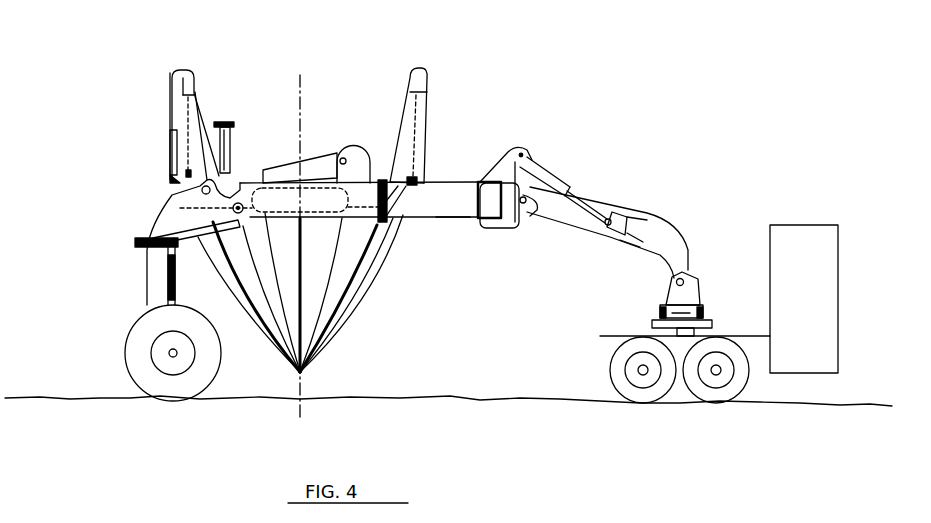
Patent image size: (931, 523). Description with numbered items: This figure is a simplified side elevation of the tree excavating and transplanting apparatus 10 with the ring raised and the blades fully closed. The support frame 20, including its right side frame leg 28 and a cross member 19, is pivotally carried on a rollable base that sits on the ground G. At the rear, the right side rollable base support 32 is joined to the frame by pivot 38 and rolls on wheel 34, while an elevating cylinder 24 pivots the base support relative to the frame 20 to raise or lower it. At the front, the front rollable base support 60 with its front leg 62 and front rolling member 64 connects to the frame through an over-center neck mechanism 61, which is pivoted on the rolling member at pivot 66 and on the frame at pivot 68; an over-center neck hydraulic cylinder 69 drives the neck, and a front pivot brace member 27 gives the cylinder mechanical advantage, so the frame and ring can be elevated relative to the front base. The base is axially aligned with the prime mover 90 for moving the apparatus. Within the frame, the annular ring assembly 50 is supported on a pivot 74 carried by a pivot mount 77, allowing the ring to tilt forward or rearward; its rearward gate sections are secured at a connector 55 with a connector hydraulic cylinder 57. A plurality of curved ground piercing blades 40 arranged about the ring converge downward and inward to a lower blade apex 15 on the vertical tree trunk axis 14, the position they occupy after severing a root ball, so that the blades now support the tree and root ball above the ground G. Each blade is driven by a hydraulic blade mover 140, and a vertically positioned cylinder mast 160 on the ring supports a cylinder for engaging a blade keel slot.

The tree excavating and transplanting apparatus 10 is at (569, 106).
The vertical tree trunk axis 14 is at (305, 379).
The lower blade apex 15 is at (296, 371).
The cross member 19 is at (447, 220).
The support frame 20 is at (459, 192).
The elevating cylinder 24 is at (295, 170).
The front pivot brace member 27 is at (508, 158).
The right side frame leg 28 is at (394, 207).
The right side rollable base support 32 is at (165, 228).
The wheel 34 is at (137, 355).
The pivot 38 is at (239, 203).
The ground piercing blades 40 is at (374, 311).
The annular ring assembly 50 is at (358, 203).
The connector 55 is at (220, 143).
The connector hydraulic cylinder 57 is at (172, 157).
The front rollable base support 60 is at (669, 361).
The over-center neck mechanism 61 is at (605, 250).
The front leg 62 is at (565, 217).
The front rolling member 64 is at (744, 373).
The pivot 66 is at (682, 268).
The pivot 68 is at (530, 211).
The over-center neck hydraulic cylinder 69 is at (553, 175).
The pivot 74 is at (245, 213).
The pivot mount 77 is at (317, 202).
The prime mover 90 is at (818, 256).
The hydraulic blade movers 140 is at (187, 80).
The cylinder mast 160 is at (402, 145).
The ground G is at (470, 404).